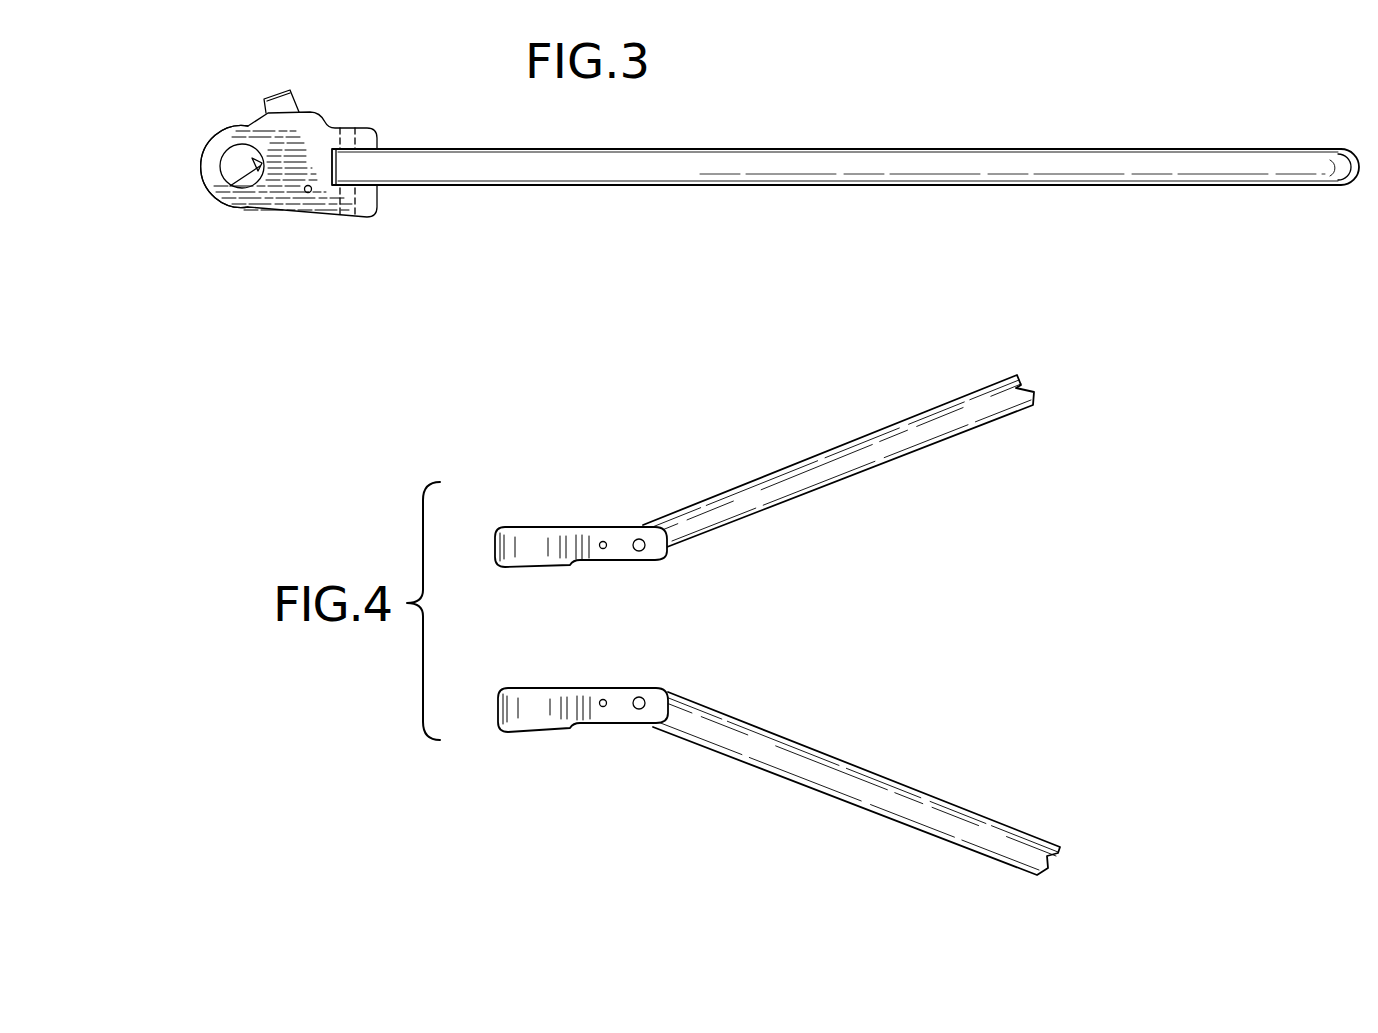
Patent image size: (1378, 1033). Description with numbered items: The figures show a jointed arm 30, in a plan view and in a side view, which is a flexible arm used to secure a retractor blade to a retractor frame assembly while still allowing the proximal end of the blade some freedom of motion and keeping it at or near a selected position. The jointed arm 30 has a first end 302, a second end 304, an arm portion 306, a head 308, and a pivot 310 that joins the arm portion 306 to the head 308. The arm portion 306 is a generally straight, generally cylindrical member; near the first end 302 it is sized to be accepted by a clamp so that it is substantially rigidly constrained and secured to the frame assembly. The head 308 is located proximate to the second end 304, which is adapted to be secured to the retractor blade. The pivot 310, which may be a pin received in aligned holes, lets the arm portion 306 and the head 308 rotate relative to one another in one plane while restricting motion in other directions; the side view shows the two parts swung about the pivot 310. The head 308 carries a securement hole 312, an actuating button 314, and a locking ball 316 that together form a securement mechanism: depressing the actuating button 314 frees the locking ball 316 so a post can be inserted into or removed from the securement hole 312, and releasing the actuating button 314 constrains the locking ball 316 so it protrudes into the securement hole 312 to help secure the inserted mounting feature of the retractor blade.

In FIG. 3, the jointed arm 30 is at (797, 117).
In FIG. 4, the jointed arm 30 is at (808, 550).
In FIG. 3, the first end 302 is at (1317, 200).
In FIG. 3, the second end 304 is at (275, 238).
In FIG. 3, the arm portion 306 is at (647, 187).
In FIG. 4, the arm portion 306 is at (830, 490).
In FIG. 3, the head 308 is at (312, 125).
In FIG. 4, the head 308 is at (590, 527).
In FIG. 3, the pivot 310 is at (366, 215).
In FIG. 4, the pivot 310 is at (646, 552).
In FIG. 3, the securement hole 312 is at (242, 157).
In FIG. 3, the actuating button 314 is at (292, 98).
In FIG. 3, the locking ball 316 is at (238, 211).